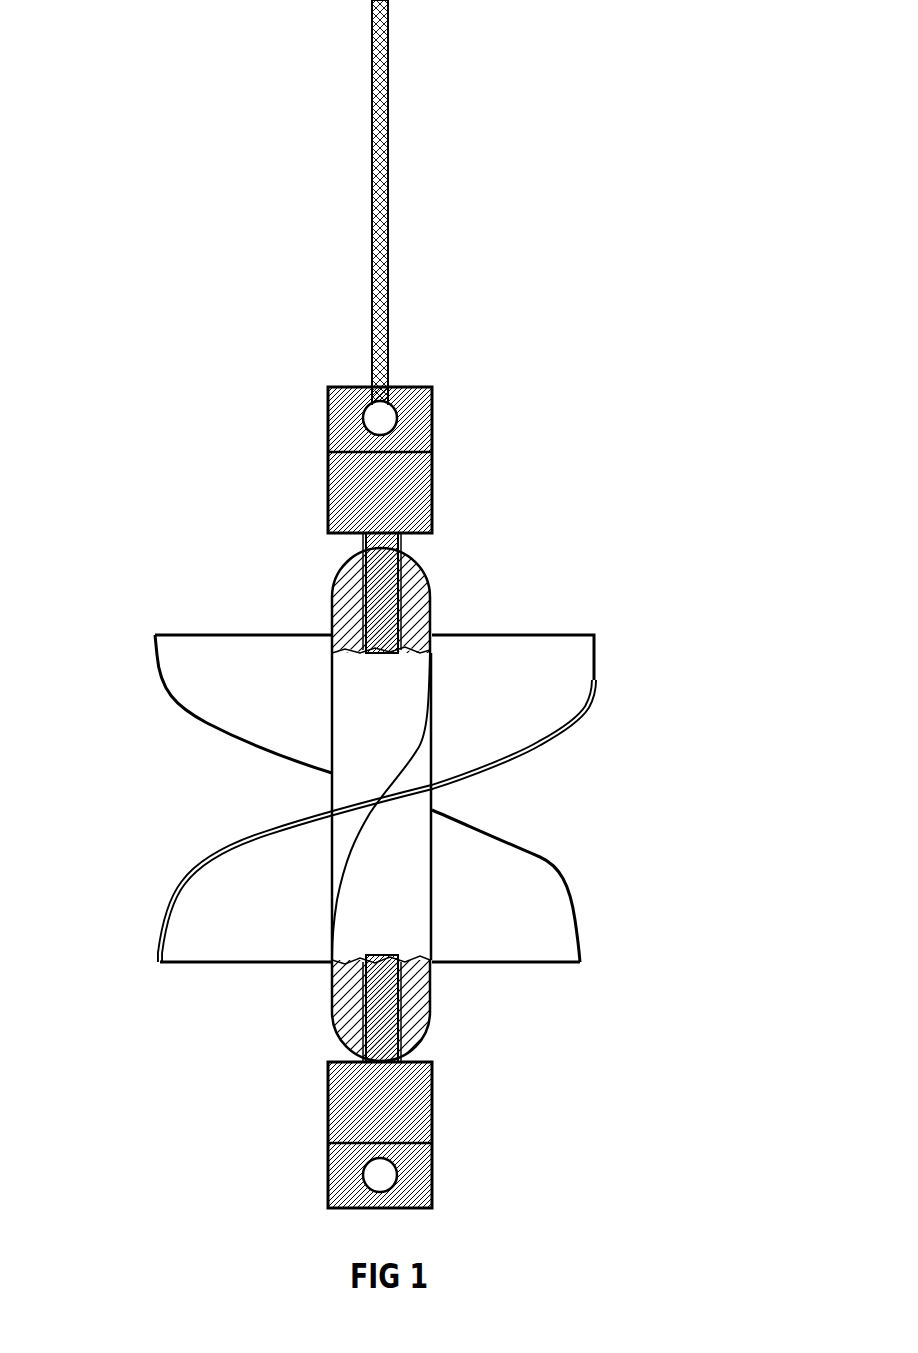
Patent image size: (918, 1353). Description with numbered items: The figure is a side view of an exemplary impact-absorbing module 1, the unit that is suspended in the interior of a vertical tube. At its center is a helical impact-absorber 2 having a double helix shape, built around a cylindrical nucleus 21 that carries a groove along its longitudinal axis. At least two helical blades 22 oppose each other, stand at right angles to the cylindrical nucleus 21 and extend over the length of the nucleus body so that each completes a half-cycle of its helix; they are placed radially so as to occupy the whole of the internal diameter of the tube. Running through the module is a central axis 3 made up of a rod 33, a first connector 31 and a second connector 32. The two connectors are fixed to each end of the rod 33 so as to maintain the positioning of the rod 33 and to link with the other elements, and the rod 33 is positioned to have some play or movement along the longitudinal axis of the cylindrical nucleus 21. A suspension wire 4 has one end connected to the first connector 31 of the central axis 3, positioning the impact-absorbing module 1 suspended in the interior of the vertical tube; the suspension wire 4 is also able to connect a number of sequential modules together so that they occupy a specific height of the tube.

The impact-absorbing module 1 is at (709, 449).
The helical impact-absorber 2 is at (440, 821).
The cylindrical nucleus 21 is at (527, 756).
The helical blades 22 is at (378, 676).
The central axis 3 is at (526, 1011).
The first connector 31 is at (526, 443).
The second connector 32 is at (526, 1135).
The rod 33 is at (282, 575).
The suspension wire 4 is at (388, 195).